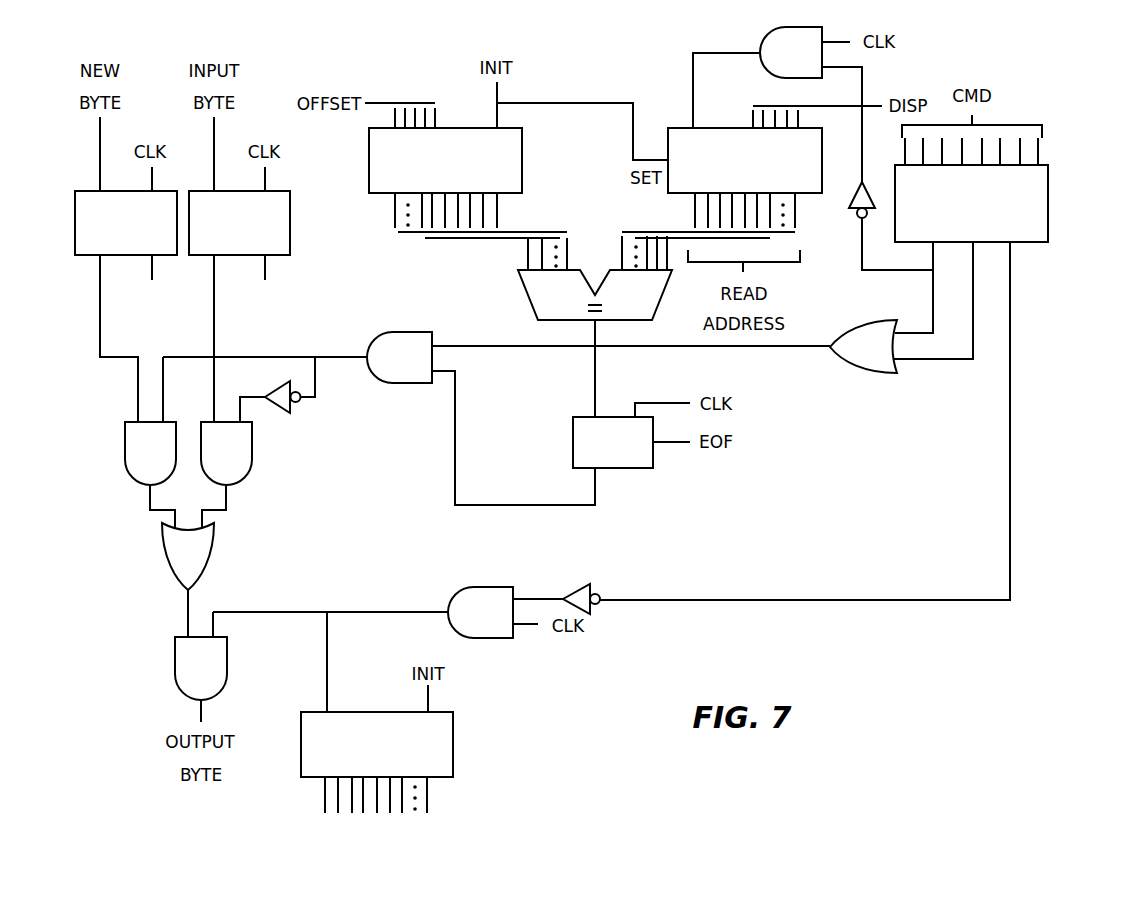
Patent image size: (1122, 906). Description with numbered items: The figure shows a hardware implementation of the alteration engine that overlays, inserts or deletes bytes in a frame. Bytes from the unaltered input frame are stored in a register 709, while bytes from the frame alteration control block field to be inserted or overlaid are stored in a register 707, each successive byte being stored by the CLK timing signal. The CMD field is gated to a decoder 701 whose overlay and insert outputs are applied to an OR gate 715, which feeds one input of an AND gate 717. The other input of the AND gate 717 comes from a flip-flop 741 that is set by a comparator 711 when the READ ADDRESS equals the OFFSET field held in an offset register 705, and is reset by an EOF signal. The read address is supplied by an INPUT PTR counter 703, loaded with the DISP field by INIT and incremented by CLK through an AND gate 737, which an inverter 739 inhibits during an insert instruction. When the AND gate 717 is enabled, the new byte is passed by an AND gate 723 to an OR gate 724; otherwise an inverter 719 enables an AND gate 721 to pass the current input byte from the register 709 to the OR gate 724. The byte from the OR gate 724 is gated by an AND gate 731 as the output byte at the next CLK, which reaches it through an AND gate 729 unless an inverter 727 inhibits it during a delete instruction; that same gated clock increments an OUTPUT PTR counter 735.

The decoder 701 is at (1048, 182).
The INPUT PTR counter 703 is at (670, 128).
The offset register 705 is at (522, 152).
The register 707 is at (95, 191).
The register 709 is at (290, 218).
The comparator 711 is at (522, 298).
The OR gate 715 is at (855, 372).
The AND gate 717 is at (370, 333).
The inverter 719 is at (290, 411).
The AND gate 721 is at (253, 440).
The AND gate 723 is at (128, 476).
The OR gate 724 is at (165, 530).
The inverter 727 is at (578, 586).
The AND gate 729 is at (460, 587).
The AND gate 731 is at (175, 655).
The OUTPUT PTR counter 735 is at (453, 742).
The AND gate 737 is at (760, 38).
The inverter 739 is at (858, 206).
The flip-flop 741 is at (573, 440).